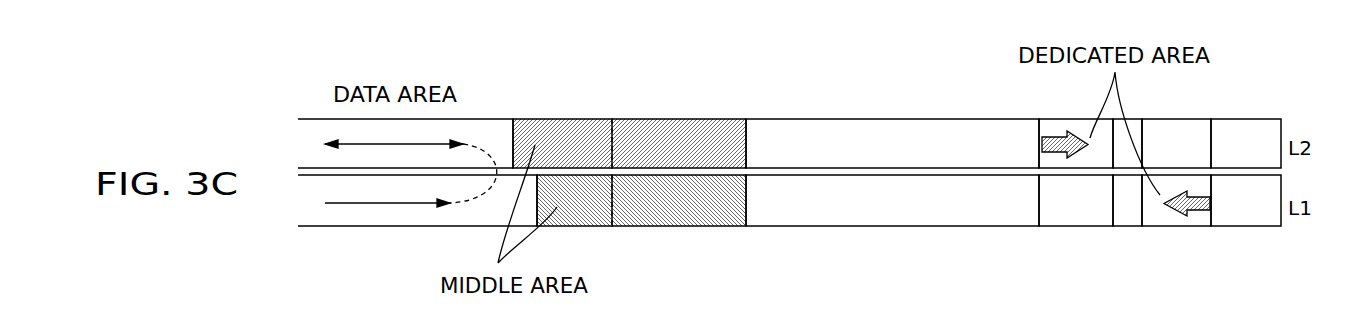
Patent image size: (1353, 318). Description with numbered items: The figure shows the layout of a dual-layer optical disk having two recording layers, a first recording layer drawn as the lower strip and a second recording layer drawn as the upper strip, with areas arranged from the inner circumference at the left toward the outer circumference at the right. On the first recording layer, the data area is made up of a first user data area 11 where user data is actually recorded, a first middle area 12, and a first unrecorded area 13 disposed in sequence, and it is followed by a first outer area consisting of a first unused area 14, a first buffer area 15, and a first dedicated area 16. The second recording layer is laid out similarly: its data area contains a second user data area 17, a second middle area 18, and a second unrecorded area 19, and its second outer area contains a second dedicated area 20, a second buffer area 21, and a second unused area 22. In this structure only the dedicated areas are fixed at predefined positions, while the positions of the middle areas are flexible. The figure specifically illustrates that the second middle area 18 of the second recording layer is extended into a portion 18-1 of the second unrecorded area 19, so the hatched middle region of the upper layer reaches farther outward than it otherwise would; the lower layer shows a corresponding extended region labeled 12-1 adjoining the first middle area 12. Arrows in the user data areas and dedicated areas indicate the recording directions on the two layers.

The first user data area 11 is at (385, 217).
The first middle area 12 is at (577, 213).
The middle area extension of layer L1 12-1 is at (695, 213).
The first unrecorded area 13 is at (798, 212).
The first unused area 14 is at (1060, 220).
The first buffer area 15 is at (1128, 220).
The first dedicated area 16 is at (1183, 220).
The second user data area 17 is at (473, 132).
The second middle area 18 is at (573, 132).
The portion of the second unrecorded area 18-1 is at (668, 132).
The second unrecorded area 19 is at (787, 132).
The second dedicated area 20 is at (1050, 127).
The second buffer area 21 is at (1133, 130).
The second unused area 22 is at (1180, 130).